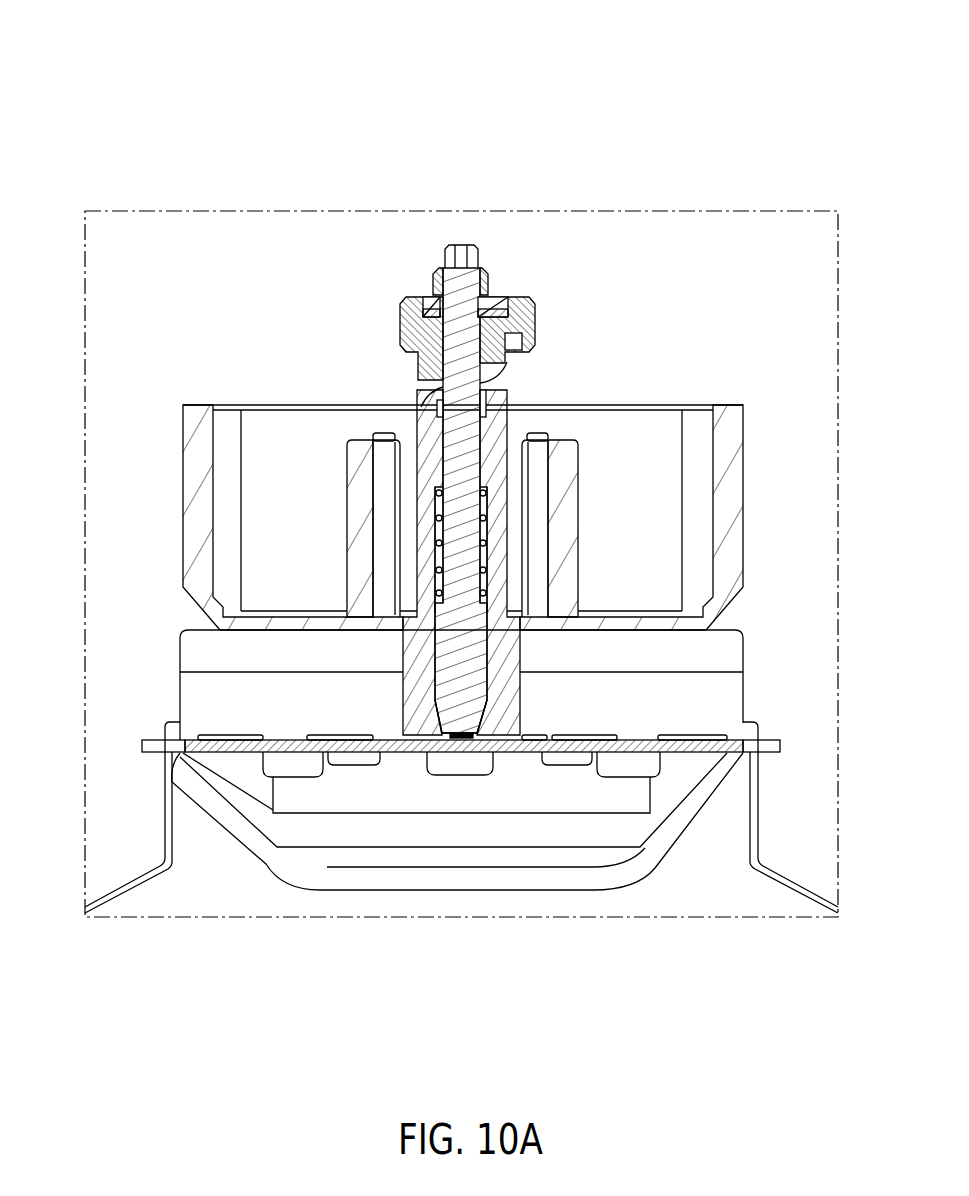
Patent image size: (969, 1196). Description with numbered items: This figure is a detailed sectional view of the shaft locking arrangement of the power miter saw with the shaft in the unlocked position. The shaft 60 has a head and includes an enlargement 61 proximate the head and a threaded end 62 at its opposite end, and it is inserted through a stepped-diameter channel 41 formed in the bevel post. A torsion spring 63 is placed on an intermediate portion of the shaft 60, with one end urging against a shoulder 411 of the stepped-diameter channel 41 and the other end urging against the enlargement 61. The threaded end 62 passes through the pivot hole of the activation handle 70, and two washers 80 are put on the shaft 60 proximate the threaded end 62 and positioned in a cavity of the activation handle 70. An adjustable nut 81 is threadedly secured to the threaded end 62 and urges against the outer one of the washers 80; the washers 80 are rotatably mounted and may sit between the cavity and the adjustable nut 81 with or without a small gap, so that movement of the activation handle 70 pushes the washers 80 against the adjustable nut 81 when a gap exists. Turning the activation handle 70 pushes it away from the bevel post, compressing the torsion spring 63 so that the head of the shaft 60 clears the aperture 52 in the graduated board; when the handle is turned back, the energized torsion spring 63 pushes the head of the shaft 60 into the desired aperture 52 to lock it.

The stepped-diameter channel 41 is at (440, 583).
The shoulder 411 is at (442, 490).
The aperture 52 is at (458, 747).
The shaft 60 is at (465, 445).
The enlargement 61 is at (455, 678).
The threaded end 62 is at (488, 273).
The torsion spring 63 is at (438, 542).
The activation handle 70 is at (512, 322).
The washers 80 is at (427, 296).
The adjustable nut 81 is at (437, 268).